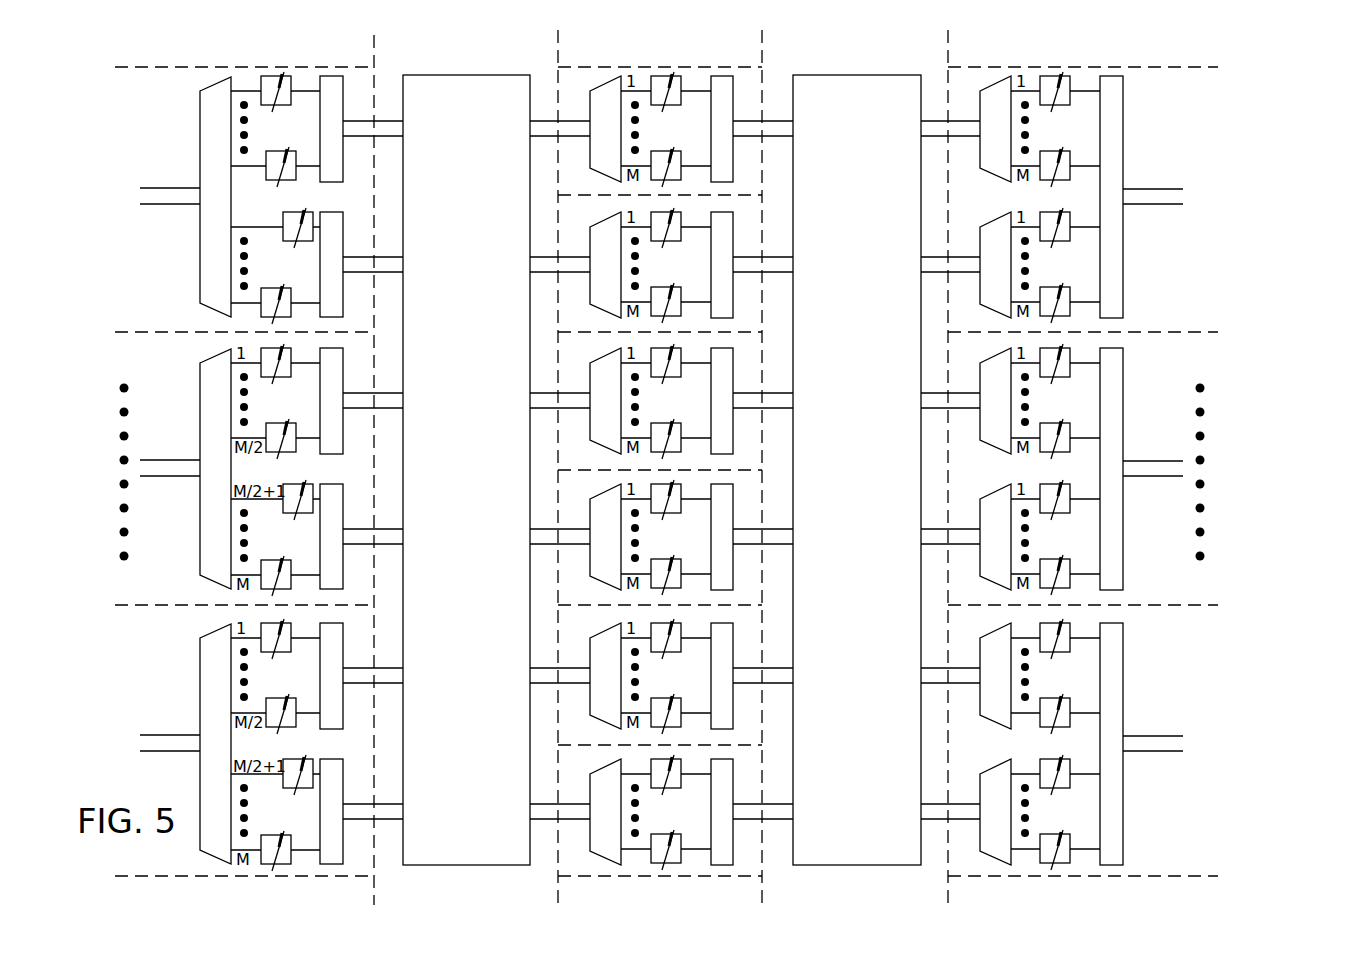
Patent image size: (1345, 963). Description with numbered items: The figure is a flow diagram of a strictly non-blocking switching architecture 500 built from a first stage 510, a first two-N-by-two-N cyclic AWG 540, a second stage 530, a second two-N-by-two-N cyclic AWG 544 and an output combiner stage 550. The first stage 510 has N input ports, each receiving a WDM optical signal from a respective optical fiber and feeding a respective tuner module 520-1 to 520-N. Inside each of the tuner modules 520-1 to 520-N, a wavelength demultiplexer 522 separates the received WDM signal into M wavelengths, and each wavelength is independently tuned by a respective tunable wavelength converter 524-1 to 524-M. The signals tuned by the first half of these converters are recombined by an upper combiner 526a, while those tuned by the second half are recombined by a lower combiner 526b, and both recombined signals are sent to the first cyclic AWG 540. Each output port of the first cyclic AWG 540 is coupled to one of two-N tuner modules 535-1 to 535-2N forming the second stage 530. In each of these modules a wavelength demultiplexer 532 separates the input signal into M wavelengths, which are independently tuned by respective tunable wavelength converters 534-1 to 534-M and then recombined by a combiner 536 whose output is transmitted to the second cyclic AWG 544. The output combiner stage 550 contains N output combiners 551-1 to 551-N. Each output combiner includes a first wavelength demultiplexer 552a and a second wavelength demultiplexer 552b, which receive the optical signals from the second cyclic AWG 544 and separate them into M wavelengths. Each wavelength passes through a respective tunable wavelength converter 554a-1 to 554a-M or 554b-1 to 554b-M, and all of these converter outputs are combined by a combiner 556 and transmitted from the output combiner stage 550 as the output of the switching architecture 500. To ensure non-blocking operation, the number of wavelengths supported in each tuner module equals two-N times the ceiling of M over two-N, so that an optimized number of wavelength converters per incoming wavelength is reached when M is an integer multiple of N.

The strictly non-blocking switching architecture 500 is at (1332, 78).
The first stage 510 is at (253, 471).
The tuner module 520-1 is at (253, 182).
The tuner module 520-N is at (235, 745).
The wavelength demultiplexer 522 is at (228, 78).
The tunable wavelength converter 524-1 is at (262, 75).
The tunable wavelength converter 524-M is at (262, 316).
The upper combiner 526a is at (343, 98).
The lower combiner 526b is at (343, 307).
The second stage 530 is at (689, 471).
The wavelength demultiplexer 532 is at (590, 858).
The tunable wavelength converter 534-1 is at (673, 757).
The tunable wavelength converter 534-M is at (675, 868).
The tuner module 535-1 is at (661, 113).
The tuner module 535-2N is at (778, 791).
The combiner 536 is at (733, 830).
The first 2N×2N cyclic AWG 540 is at (467, 88).
The second 2N×2N cyclic AWG 544 is at (857, 90).
The output combiner stage 550 is at (1119, 488).
The output combiner 551-1 is at (1178, 153).
The output combiner 551-N is at (1162, 811).
The first wavelength demultiplexer 552a is at (992, 720).
The second wavelength demultiplexer 552b is at (990, 858).
The tunable wavelength converter 554a-1 is at (1070, 628).
The tunable wavelength converter 554a-M is at (1070, 700).
The tunable wavelength converter 554b-1 is at (1064, 790).
The tunable wavelength converter 554b-M is at (1070, 857).
The combiner 556 is at (1112, 783).